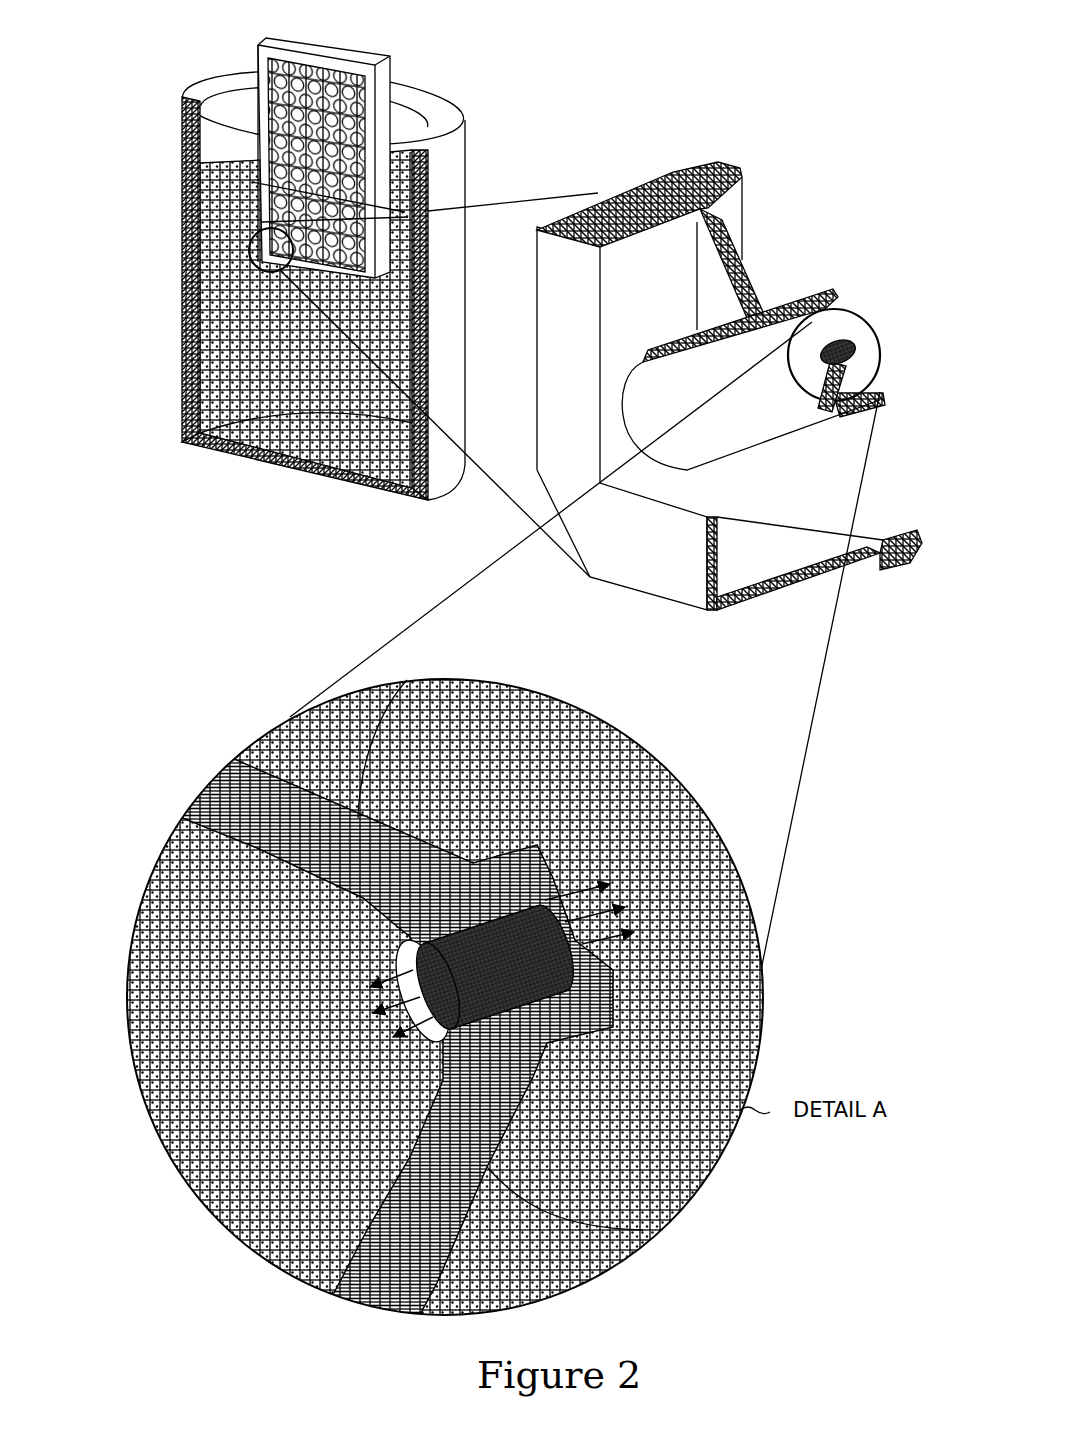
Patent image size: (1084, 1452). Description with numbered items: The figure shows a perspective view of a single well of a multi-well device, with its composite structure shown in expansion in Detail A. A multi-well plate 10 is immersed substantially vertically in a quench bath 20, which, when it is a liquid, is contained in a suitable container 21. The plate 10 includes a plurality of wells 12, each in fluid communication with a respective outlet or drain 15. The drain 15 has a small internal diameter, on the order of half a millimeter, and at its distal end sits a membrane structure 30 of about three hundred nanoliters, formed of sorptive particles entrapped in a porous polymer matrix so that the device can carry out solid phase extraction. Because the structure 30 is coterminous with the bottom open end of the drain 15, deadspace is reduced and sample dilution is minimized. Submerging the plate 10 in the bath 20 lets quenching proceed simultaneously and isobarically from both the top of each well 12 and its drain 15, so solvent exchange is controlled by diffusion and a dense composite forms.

The multi-well plate 10 is at (387, 53).
The well 12 is at (678, 346).
The drain 15 is at (880, 377).
The quench bath 20 is at (215, 343).
The container 21 is at (452, 155).
The membrane structure 30 is at (867, 330).